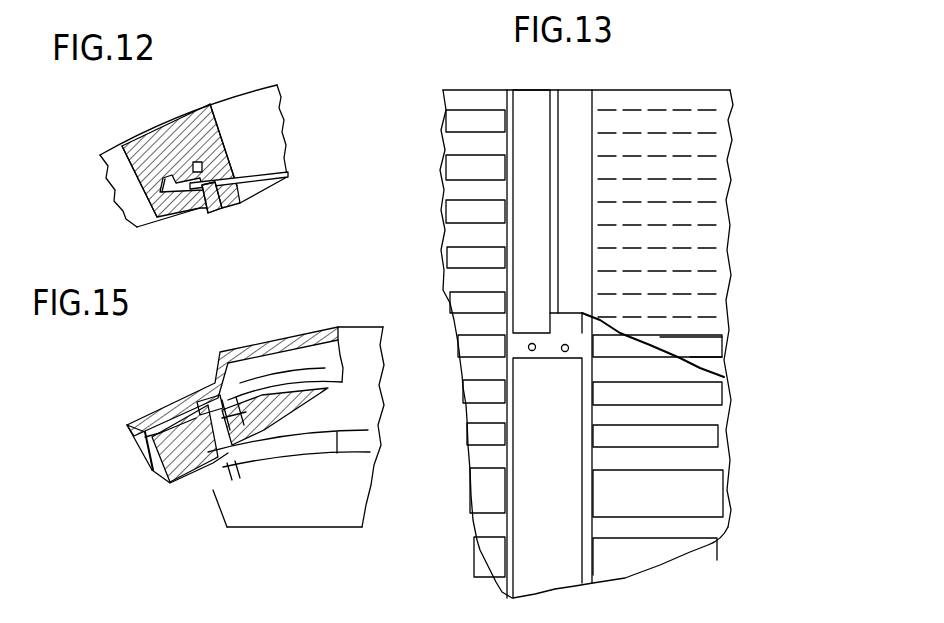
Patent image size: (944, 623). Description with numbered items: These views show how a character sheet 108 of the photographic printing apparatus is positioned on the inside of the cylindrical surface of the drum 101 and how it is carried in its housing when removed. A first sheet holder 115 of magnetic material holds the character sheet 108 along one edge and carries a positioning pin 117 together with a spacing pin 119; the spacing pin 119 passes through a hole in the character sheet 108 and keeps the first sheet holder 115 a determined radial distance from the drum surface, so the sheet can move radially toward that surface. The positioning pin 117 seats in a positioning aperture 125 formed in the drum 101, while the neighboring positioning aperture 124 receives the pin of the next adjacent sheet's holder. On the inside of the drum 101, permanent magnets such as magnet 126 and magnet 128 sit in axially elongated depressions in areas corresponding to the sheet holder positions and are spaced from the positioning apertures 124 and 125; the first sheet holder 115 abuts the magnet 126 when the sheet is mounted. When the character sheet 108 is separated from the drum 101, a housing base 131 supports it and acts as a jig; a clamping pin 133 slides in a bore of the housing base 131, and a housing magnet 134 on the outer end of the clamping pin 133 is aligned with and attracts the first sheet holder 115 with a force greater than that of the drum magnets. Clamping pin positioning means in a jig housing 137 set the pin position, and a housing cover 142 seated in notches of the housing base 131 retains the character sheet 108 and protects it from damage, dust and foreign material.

In FIG. 12, the drum 101 is at (222, 100).
In FIG. 13, the drum 101 is at (470, 98).
In FIG. 12, the character sheet 108 is at (262, 185).
In FIG. 13, the character sheet 108 is at (677, 100).
In FIG. 15, the character sheet 108 is at (327, 386).
In FIG. 12, the first sheet holder 115 is at (215, 203).
In FIG. 13, the first sheet holder 115 is at (583, 100).
In FIG. 15, the first sheet holder 115 is at (185, 402).
In FIG. 12, the positioning pin 117 is at (195, 189).
In FIG. 15, the spacing pin 119 is at (225, 403).
In FIG. 12, the positioning aperture 124 is at (165, 182).
In FIG. 13, the positioning aperture 124 is at (527, 347).
In FIG. 12, the positioning aperture 125 is at (197, 163).
In FIG. 13, the positioning aperture 125 is at (572, 348).
In FIG. 13, the magnet 126 is at (568, 578).
In FIG. 13, the magnet 128 is at (530, 100).
In FIG. 15, the housing base 131 is at (163, 477).
In FIG. 15, the clamping pin 133 is at (228, 462).
In FIG. 15, the housing magnet 134 is at (145, 436).
In FIG. 15, the jig housing 137 is at (352, 504).
In FIG. 15, the housing cover 142 is at (249, 340).